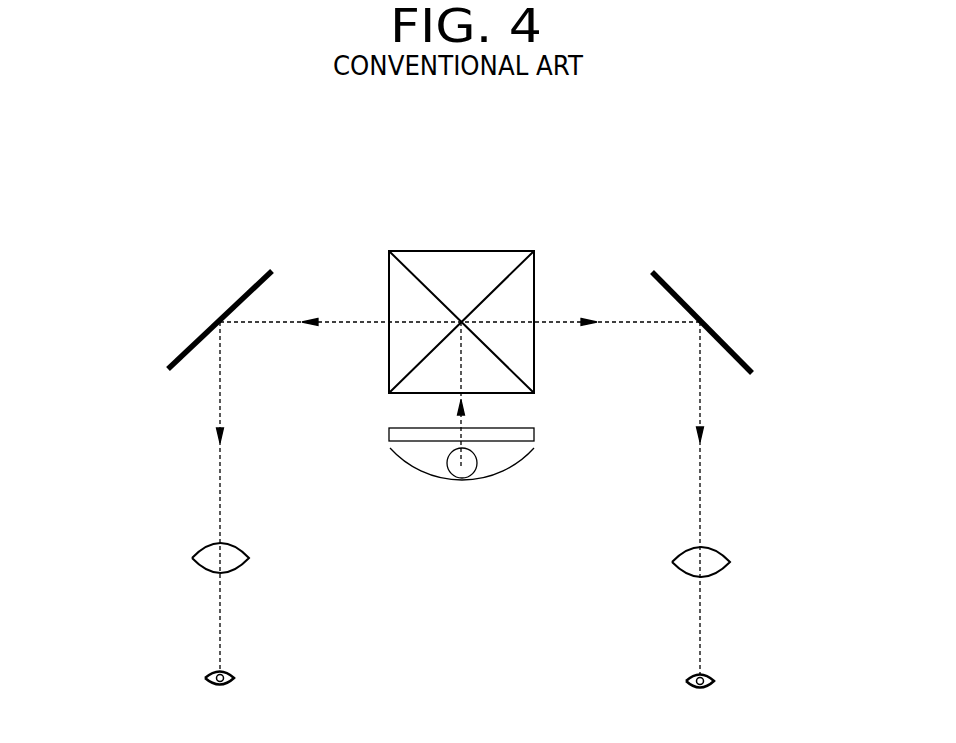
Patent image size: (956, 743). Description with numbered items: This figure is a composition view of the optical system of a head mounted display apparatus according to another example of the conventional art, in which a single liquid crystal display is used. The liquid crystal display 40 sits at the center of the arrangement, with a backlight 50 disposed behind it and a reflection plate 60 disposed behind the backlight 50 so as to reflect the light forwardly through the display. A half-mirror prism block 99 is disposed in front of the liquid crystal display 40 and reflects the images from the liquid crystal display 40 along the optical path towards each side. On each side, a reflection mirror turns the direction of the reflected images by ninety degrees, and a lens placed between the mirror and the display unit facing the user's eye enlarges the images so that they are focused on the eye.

The half-mirror prism block 99 is at (417, 260).
The liquid crystal display 40 is at (534, 433).
The backlight 50 is at (450, 468).
The reflection plate 60 is at (507, 472).